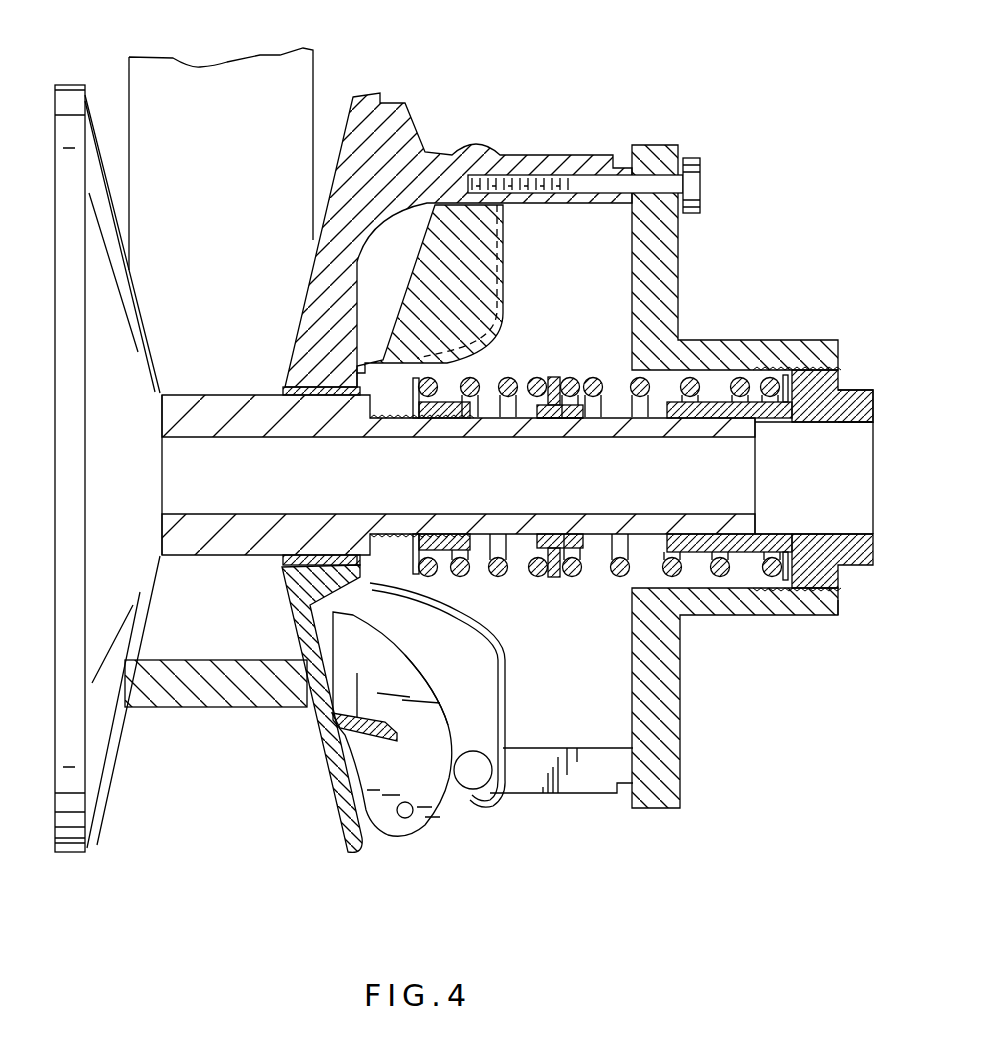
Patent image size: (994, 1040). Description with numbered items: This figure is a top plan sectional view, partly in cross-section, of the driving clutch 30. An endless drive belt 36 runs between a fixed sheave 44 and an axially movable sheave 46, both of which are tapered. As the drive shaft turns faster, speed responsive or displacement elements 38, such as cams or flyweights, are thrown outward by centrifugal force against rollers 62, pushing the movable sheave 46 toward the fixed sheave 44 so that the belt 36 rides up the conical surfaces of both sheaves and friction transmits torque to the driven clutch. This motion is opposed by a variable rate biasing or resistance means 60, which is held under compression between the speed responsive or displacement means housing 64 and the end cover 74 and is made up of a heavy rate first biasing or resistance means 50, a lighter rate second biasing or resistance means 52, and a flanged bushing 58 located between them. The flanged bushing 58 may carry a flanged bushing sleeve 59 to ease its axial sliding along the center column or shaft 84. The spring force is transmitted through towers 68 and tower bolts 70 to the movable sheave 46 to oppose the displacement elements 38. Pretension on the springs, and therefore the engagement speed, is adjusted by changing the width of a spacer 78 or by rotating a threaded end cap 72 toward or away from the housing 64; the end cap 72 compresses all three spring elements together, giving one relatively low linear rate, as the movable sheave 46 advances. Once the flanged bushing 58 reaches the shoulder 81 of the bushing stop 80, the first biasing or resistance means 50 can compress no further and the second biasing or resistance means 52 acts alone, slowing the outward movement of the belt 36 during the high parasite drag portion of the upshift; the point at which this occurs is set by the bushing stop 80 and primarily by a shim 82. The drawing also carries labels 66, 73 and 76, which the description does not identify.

The driving clutch 30 is at (518, 68).
The endless drive belt 36 is at (235, 707).
The speed responsive or displacement elements 38 is at (433, 825).
The fixed sheave 44 is at (77, 853).
The axially movable sheave 46 is at (363, 850).
The first biasing or resistance means 50 is at (508, 376).
The second biasing or resistance means 52 is at (593, 376).
The flanged bushing 58 is at (553, 377).
The flanged bushing sleeve 59 is at (562, 418).
The variable rate biasing or resistance means 60 is at (548, 590).
The rollers 62 is at (470, 798).
The speed responsive or displacement means housing 64 is at (506, 712).
The cam surface 66 is at (468, 684).
The towers 68 is at (609, 157).
The tower bolts 70 is at (693, 160).
The threaded end cap 72 is at (857, 390).
The lower nut 73 is at (785, 534).
The end cover 74 is at (681, 713).
The adjustment assembly 76 is at (852, 618).
The spacer 78 is at (783, 422).
The bushing stop 80 is at (450, 380).
The shoulder 81 is at (475, 552).
The shim 82 is at (420, 408).
The center column or shaft 84 is at (660, 395).